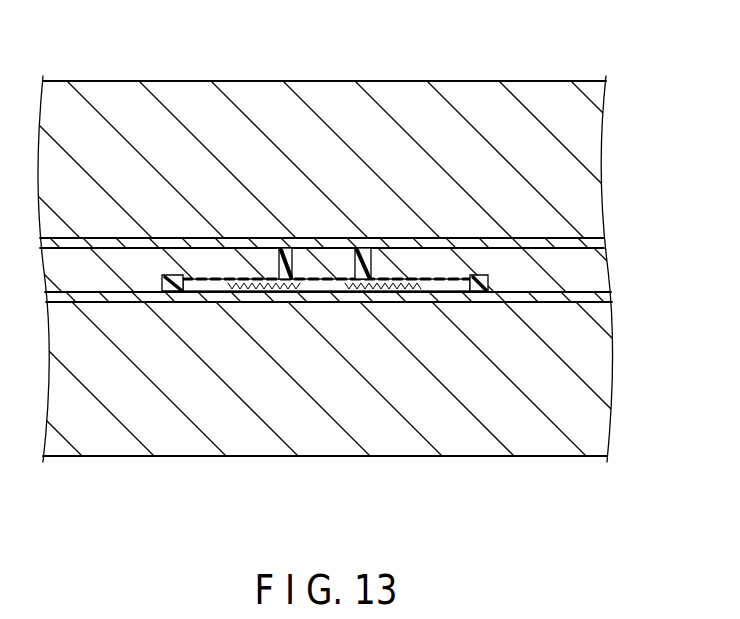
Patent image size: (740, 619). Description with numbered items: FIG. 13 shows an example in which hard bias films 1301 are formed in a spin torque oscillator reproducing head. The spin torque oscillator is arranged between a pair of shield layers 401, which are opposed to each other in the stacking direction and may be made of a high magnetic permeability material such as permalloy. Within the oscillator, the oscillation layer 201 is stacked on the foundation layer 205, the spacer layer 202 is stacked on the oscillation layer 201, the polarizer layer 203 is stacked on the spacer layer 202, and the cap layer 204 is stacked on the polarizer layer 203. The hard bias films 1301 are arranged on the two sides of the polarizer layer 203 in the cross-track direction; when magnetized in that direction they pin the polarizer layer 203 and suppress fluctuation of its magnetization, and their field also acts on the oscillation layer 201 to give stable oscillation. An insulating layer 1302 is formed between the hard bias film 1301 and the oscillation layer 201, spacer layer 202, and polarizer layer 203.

The shield layer 401 is at (473, 93).
The cap layer 204 is at (600, 243).
The foundation layer 205 is at (603, 296).
The hard bias film 1301 is at (117, 263).
The insulating layer 1302 is at (177, 288).
The oscillation layer 201 is at (303, 293).
The spacer layer 202 is at (347, 290).
The polarizer layer 203 is at (320, 263).